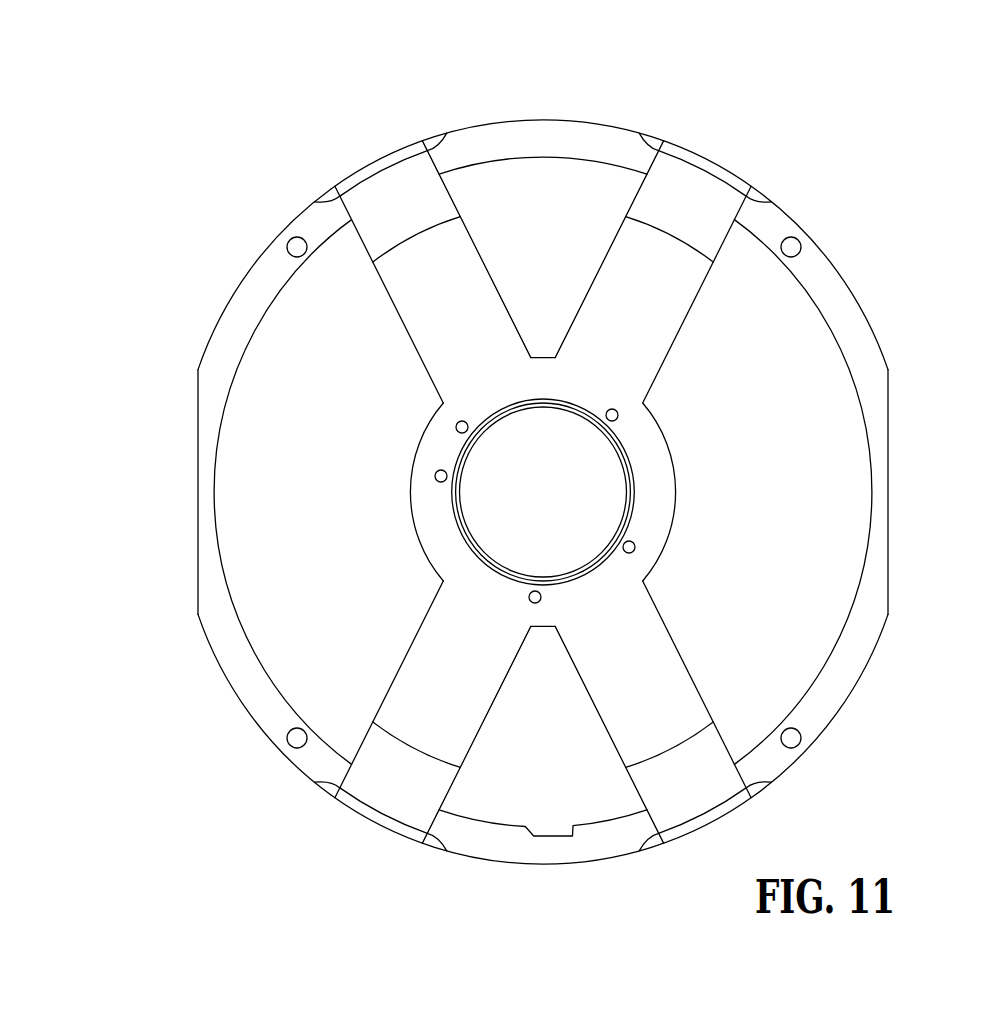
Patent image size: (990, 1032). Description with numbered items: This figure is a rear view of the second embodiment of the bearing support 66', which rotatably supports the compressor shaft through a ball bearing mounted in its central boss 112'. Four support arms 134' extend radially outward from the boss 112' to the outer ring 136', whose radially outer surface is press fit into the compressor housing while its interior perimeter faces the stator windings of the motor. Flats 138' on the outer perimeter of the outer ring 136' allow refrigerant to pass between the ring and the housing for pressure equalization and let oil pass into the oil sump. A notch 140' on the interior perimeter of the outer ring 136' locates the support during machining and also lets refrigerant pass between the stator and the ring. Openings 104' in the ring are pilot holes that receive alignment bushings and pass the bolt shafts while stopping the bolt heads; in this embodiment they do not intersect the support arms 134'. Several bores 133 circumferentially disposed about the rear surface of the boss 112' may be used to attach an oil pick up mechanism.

The bearing support 66' is at (543, 458).
The openings 104' is at (550, 495).
The boss 112' is at (514, 492).
The bores 133 is at (458, 423).
The support arms 134' is at (543, 492).
The outer ring 136' is at (543, 122).
The flats 138' is at (537, 494).
The notch 140' is at (543, 807).